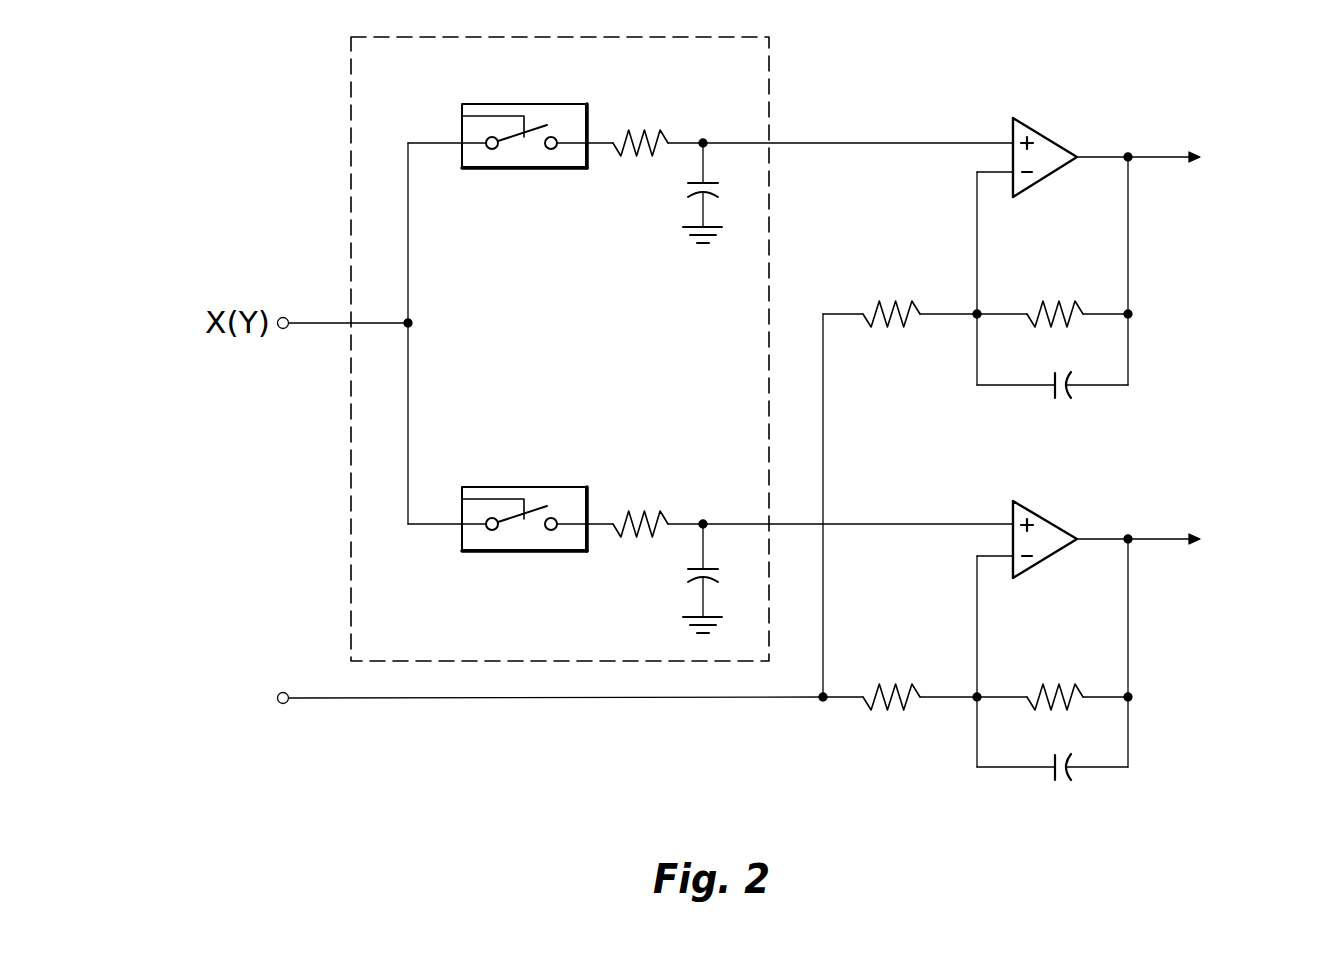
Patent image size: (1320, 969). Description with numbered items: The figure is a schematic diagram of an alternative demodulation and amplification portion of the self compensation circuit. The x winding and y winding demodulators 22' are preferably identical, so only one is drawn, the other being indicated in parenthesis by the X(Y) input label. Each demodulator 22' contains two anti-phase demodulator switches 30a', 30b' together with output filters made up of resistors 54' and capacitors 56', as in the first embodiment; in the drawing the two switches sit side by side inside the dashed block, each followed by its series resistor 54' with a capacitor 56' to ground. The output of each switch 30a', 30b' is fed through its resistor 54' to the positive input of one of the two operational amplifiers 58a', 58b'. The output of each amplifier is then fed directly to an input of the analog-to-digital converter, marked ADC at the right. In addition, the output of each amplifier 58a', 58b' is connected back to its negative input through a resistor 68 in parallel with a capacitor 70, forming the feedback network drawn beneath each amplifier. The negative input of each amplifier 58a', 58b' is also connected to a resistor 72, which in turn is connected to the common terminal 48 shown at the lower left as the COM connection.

The demodulator 22' is at (513, 349).
The anti-phase demodulator switch 30a' is at (525, 157).
The anti-phase demodulator switch 30b' is at (525, 499).
The resistor 54' is at (785, 317).
The capacitor 56' is at (676, 386).
The common terminal 48 is at (284, 704).
The resistor 72 is at (879, 303).
The resistor 68 is at (1043, 303).
The capacitor 70 is at (1068, 393).
The operational amplifier 58a' is at (1126, 148).
The operational amplifier 58b' is at (1126, 529).